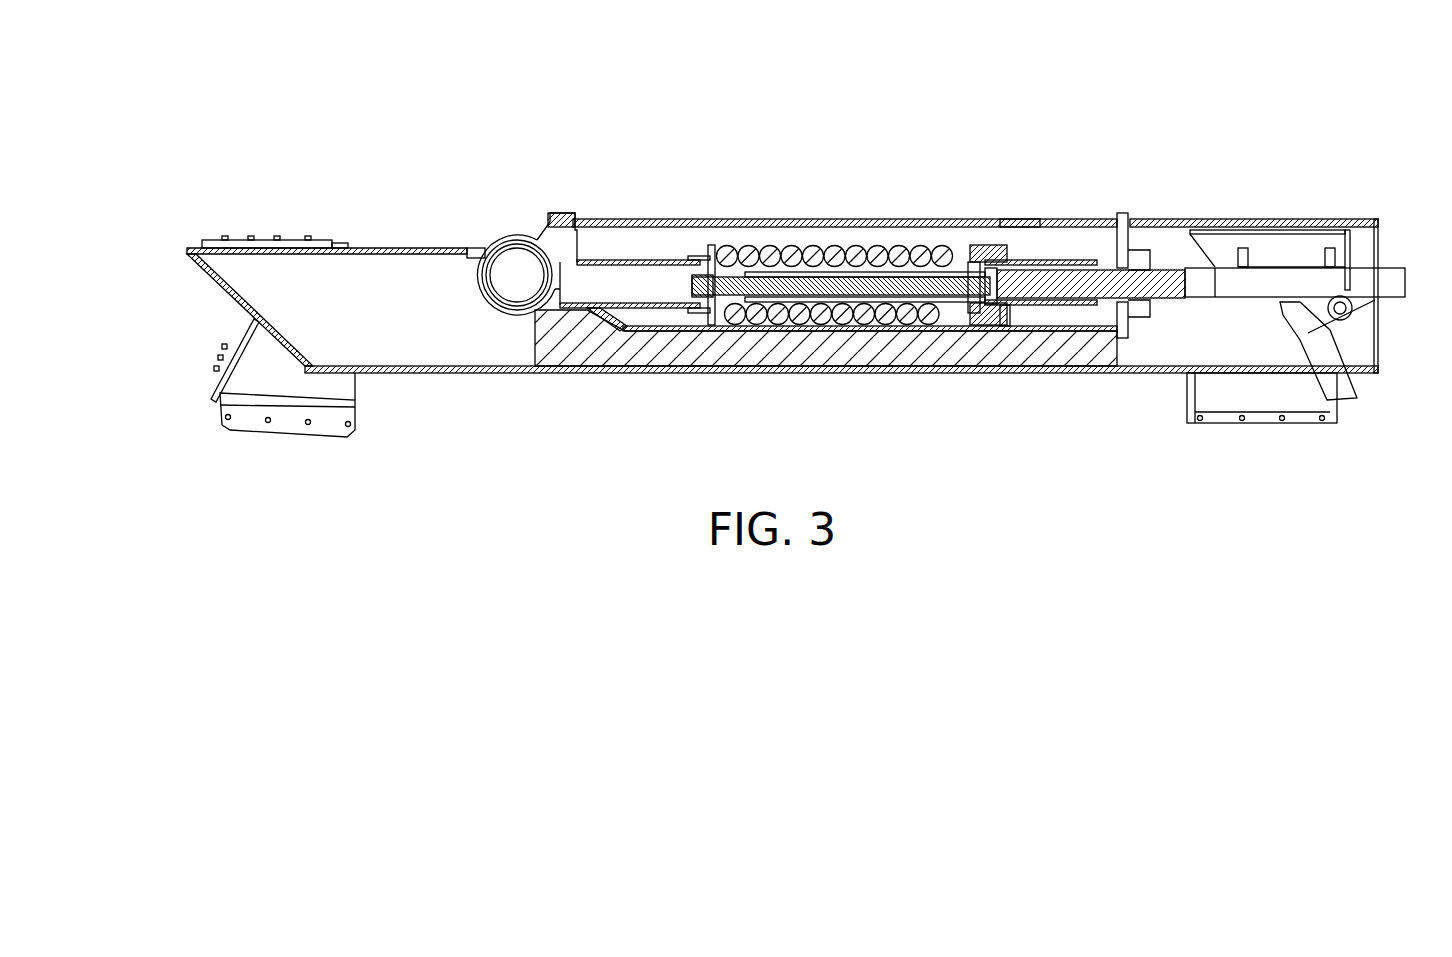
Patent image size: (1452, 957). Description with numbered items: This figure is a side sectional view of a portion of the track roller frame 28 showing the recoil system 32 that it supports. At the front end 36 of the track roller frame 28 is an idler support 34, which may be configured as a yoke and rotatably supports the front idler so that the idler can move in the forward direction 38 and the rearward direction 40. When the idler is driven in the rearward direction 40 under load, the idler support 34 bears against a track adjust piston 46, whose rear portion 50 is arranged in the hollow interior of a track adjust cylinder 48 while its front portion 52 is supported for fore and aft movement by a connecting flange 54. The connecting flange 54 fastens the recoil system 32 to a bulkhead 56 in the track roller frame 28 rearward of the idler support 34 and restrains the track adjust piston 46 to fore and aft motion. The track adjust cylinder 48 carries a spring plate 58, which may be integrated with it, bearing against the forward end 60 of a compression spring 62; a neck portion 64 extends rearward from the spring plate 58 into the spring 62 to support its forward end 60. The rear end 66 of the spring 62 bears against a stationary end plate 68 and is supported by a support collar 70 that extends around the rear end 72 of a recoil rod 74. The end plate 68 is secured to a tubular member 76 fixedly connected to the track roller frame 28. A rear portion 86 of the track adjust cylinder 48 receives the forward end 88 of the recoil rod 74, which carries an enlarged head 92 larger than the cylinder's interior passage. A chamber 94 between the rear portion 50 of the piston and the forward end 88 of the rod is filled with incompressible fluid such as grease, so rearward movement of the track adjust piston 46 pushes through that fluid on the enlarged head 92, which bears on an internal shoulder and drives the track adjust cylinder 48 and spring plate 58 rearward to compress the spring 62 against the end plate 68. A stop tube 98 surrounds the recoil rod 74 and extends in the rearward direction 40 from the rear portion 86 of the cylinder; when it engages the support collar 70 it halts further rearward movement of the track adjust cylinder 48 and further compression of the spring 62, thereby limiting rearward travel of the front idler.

The track roller frame 28 is at (610, 218).
The recoil system 32 is at (1010, 222).
The idler support 34 is at (1412, 230).
The front end 36 is at (1355, 375).
The forward direction 38 is at (1305, 148).
The rearward direction 40 is at (220, 172).
The track adjust piston 46 is at (1220, 390).
The track adjust cylinder 48 is at (1078, 300).
The rear portion 50 is at (1040, 228).
The front portion 52 is at (1182, 228).
The connecting flange 54 is at (1153, 228).
The bulkhead 56 is at (1150, 372).
The spring plate 58 is at (990, 340).
The forward end 60 is at (925, 228).
The spring 62 is at (832, 331).
The neck portion 64 is at (903, 331).
The rear end 66 is at (746, 302).
The end plate 68 is at (718, 228).
The support collar 70 is at (727, 228).
The rear end 72 is at (695, 305).
The recoil rod 74 is at (783, 290).
The tubular member 76 is at (633, 312).
The rear portion 86 is at (1025, 310).
The forward end 88 is at (975, 228).
The enlarged head 92 is at (945, 315).
The chamber 94 is at (998, 228).
The stop tube 98 is at (835, 225).